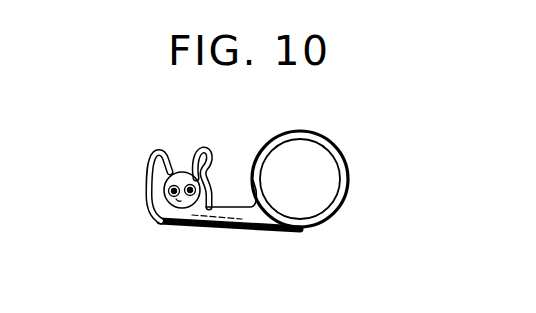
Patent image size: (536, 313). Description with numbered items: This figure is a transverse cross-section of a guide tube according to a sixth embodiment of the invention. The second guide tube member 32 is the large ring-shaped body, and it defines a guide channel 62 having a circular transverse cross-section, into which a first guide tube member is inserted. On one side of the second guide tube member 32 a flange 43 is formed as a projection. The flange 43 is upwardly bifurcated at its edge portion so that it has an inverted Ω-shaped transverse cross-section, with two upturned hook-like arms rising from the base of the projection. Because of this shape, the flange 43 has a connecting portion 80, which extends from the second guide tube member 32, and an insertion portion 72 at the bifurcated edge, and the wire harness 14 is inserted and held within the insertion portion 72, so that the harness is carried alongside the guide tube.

The wire harness 14 is at (174, 209).
The second guide tube member 32 is at (332, 134).
The flange 43 is at (147, 204).
The guide channel 62 is at (298, 183).
The insertion portion 72 is at (150, 173).
The connecting portion 80 is at (230, 207).